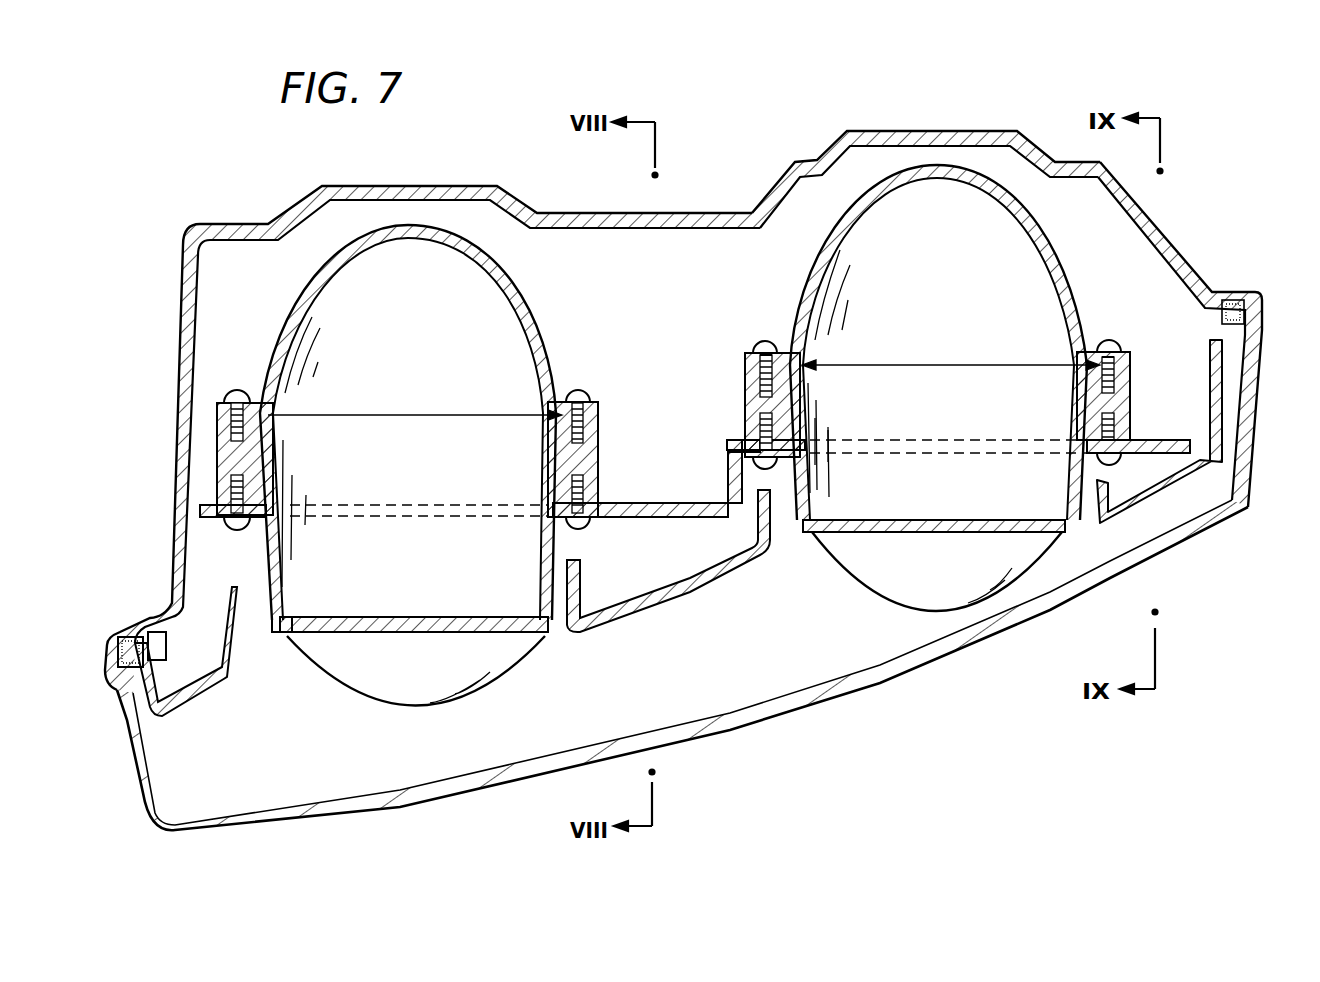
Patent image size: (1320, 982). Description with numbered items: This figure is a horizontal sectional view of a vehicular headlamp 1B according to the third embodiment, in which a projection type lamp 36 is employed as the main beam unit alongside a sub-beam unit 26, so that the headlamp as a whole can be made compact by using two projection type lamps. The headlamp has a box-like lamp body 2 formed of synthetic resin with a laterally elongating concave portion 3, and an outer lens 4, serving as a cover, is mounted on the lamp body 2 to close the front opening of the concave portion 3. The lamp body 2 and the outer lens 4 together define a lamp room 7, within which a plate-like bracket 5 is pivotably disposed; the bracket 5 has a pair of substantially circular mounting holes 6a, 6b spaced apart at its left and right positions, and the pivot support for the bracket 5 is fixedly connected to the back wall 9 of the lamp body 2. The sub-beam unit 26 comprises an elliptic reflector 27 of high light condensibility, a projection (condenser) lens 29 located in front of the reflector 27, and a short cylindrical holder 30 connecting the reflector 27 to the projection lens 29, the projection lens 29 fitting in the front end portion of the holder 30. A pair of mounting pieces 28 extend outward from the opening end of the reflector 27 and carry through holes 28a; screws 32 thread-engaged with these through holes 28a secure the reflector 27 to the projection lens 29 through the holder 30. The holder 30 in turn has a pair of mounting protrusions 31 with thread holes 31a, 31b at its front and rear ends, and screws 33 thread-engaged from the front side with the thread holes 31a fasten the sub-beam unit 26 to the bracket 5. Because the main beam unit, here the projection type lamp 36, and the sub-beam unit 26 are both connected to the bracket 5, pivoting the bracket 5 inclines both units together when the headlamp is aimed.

The headlamp unit 1B is at (982, 680).
The lamp body 2 is at (793, 164).
The concave portion 3 is at (181, 429).
The outer lens 4 is at (870, 690).
The bracket 5 is at (650, 517).
The mounting hole 6a is at (543, 506).
The mounting hole 6b is at (780, 445).
The lamp room 7 is at (692, 673).
The back wall 9 is at (901, 130).
The sub-beam unit 26 is at (845, 588).
The elliptic reflector 27 is at (860, 218).
The mounting pieces 28 is at (752, 350).
The through hole 28a is at (800, 352).
The projection lens 29 is at (888, 592).
The holder 30 is at (1080, 503).
The mounting protrusions 31 is at (745, 392).
The thread holes 31a is at (748, 446).
The upper screw portion 31b is at (748, 378).
The screws 32 is at (765, 342).
The screws 33 is at (762, 472).
The projection type lamp 36 is at (333, 688).